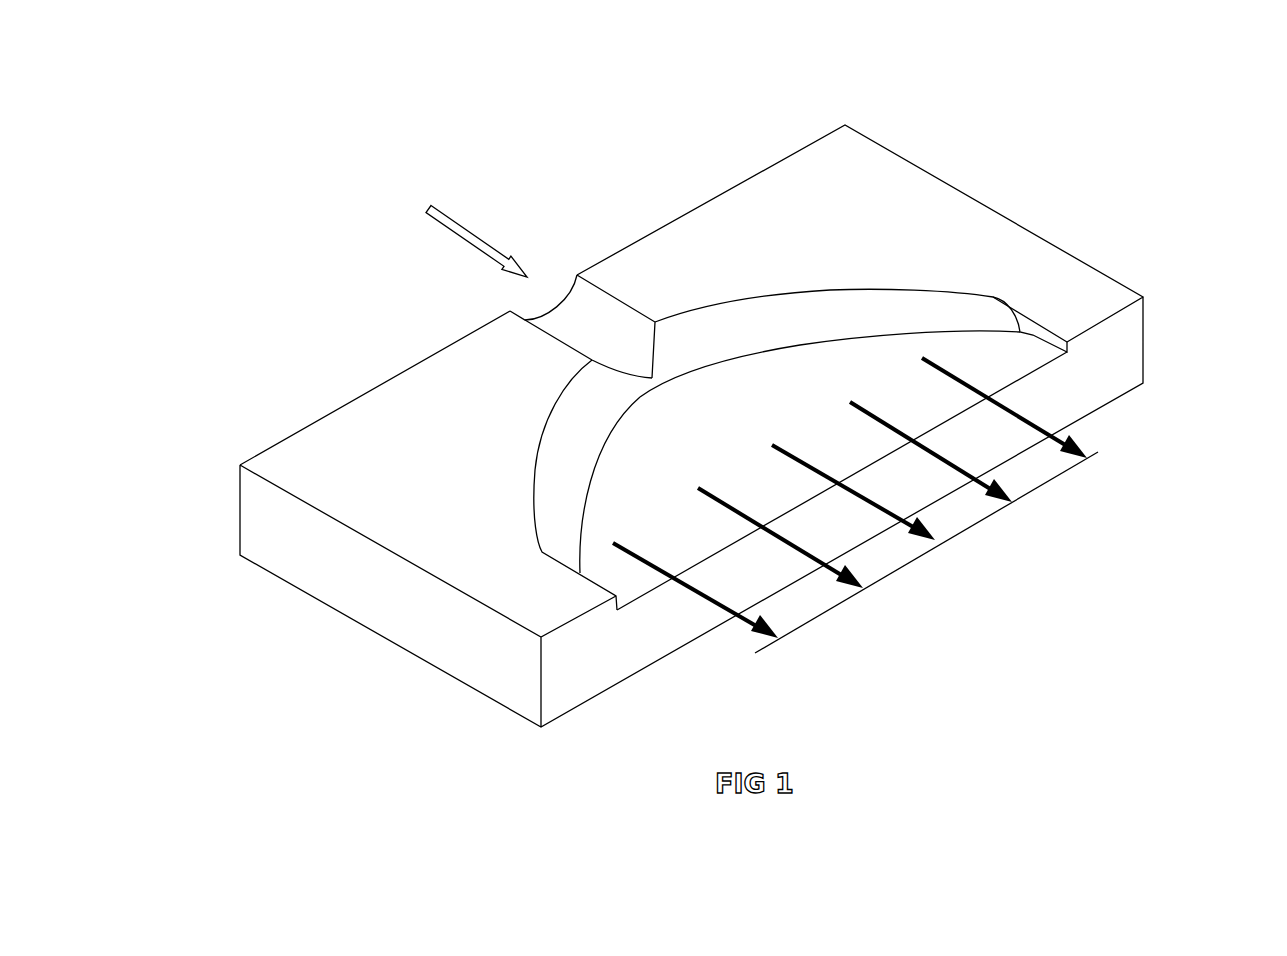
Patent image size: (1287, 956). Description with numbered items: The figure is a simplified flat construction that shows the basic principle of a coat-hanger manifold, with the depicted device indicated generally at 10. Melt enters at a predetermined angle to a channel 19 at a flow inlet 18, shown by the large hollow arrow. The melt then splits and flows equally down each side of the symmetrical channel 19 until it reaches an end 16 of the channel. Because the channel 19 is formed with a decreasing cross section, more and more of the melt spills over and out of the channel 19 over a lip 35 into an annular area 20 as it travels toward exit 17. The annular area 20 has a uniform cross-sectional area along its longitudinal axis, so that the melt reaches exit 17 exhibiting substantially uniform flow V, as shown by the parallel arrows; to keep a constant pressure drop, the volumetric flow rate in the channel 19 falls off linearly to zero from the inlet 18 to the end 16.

The flow device body 10 is at (293, 705).
The end 16 is at (1022, 323).
The exit 17 is at (1062, 475).
The flow inlet 18 is at (438, 217).
The channel 19 is at (852, 315).
The annular area 20 is at (895, 377).
The lip 35 is at (675, 382).
The uniform flow V is at (897, 568).